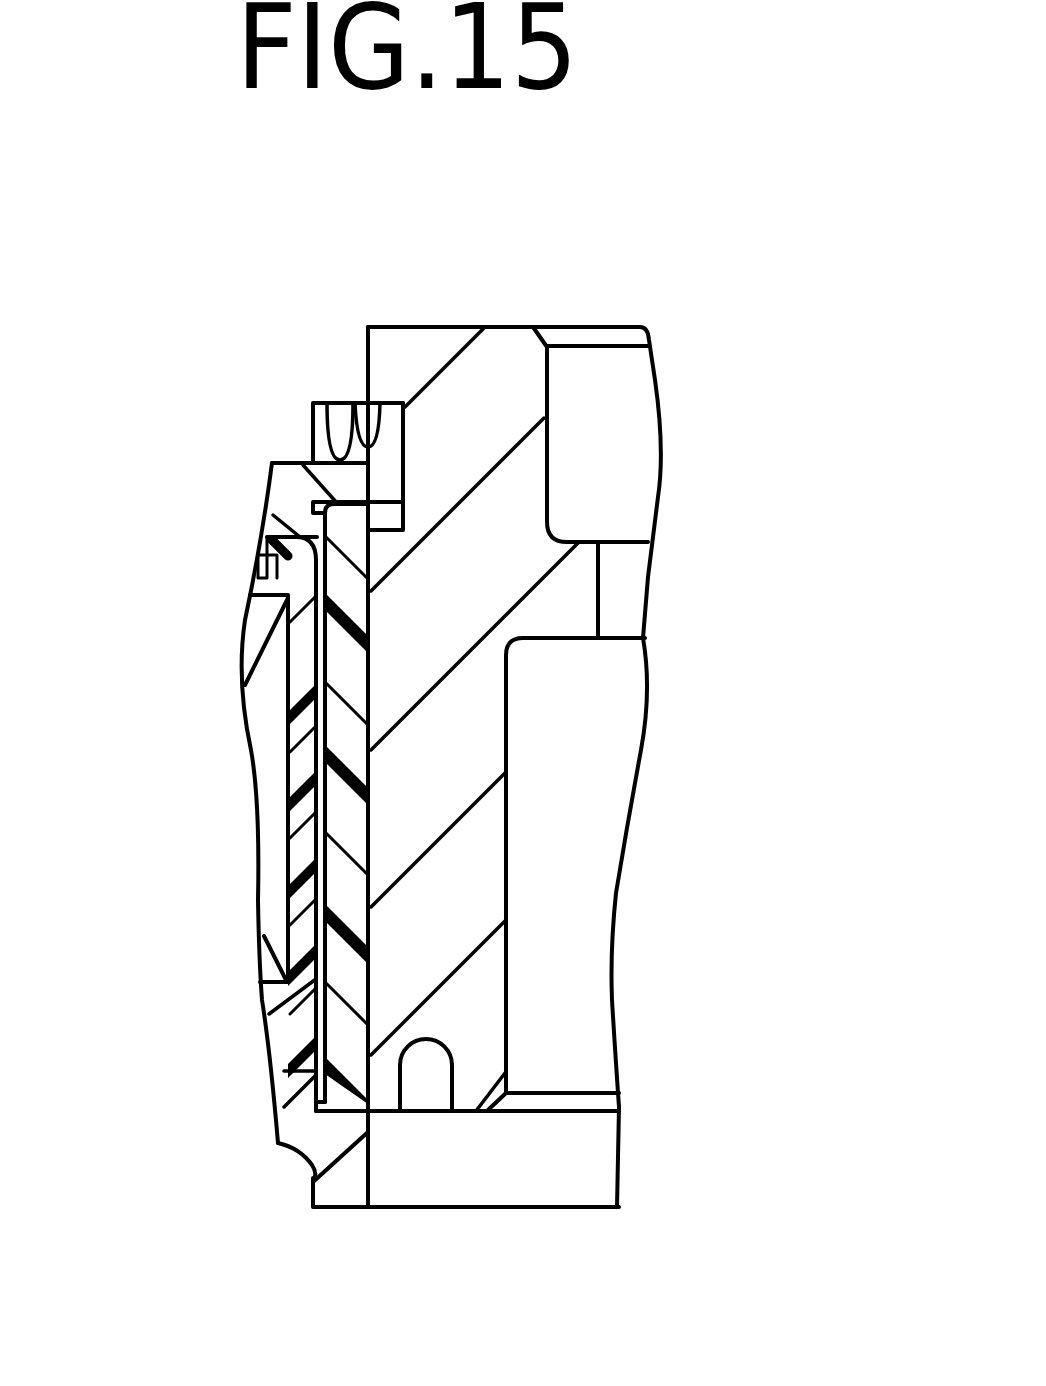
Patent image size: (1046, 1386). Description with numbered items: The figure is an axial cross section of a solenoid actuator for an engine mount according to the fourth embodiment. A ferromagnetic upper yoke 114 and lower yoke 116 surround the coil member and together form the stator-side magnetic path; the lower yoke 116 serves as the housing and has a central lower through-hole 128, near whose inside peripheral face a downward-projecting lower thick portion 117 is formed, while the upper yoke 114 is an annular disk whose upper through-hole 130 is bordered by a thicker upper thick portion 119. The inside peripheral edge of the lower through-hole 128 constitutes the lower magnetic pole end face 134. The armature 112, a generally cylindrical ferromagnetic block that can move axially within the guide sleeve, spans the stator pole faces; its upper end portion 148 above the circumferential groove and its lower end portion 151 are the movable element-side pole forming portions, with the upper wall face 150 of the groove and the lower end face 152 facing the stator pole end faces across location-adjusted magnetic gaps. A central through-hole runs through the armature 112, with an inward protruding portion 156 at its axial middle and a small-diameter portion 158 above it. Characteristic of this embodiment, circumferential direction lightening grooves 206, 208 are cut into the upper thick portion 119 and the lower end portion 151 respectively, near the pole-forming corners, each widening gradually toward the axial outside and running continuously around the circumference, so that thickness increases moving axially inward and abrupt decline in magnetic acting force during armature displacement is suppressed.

The armature 112 is at (712, 252).
The upper yoke 114 is at (234, 494).
The lower yoke 116 is at (236, 1118).
The lower thick portion 117 is at (350, 1187).
The upper thick portion 119 is at (315, 435).
The lower through-hole 128 is at (411, 933).
The lower magnetic pole end face 134 is at (346, 820).
The upper through-hole 130 is at (372, 397).
The upper end portion 148 is at (498, 362).
The upper wall face 150 is at (403, 437).
The lower end portion 151 is at (480, 1064).
The lower end face 152 is at (480, 1112).
The inward protruding portion 156 is at (557, 597).
The small-diameter portion 158 is at (547, 472).
The circumferential direction lightening groove 206 is at (342, 403).
The circumferential direction lightening groove 208 is at (452, 1088).